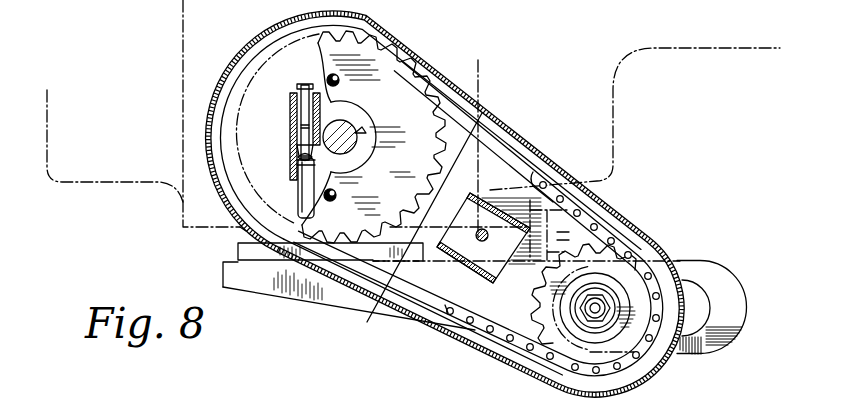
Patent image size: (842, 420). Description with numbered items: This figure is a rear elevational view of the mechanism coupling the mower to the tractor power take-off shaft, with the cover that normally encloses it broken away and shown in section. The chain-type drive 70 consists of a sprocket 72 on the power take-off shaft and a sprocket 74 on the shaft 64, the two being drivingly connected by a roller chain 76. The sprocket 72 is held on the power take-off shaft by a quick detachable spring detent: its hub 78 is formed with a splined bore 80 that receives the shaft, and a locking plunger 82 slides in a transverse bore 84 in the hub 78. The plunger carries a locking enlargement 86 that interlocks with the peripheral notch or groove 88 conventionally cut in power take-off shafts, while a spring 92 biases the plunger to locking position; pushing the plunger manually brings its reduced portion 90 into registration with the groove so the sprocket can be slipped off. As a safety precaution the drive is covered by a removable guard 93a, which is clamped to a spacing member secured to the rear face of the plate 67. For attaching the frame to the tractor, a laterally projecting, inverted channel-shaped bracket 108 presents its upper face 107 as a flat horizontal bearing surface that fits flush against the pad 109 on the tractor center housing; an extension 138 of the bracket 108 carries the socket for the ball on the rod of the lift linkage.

The shaft 64 is at (593, 312).
The plate 67 is at (415, 228).
The chain-type drive 70 is at (487, 108).
The sprocket 72 is at (401, 90).
The sprocket 74 is at (645, 254).
The roller chain 76 is at (495, 338).
The hub 78 is at (355, 126).
The splined bore 80 is at (338, 150).
The locking plunger 82 is at (303, 199).
The transverse bore 84 is at (308, 161).
The locking enlargement 86 is at (300, 130).
The peripheral notch or groove 88 is at (305, 156).
The reduced portion 90 is at (297, 166).
The spring 92 is at (292, 110).
The removable guard 93a is at (243, 229).
The upper face 107 is at (225, 260).
The bracket 108 is at (268, 298).
The pad 109 is at (237, 252).
The extension 138 is at (738, 323).